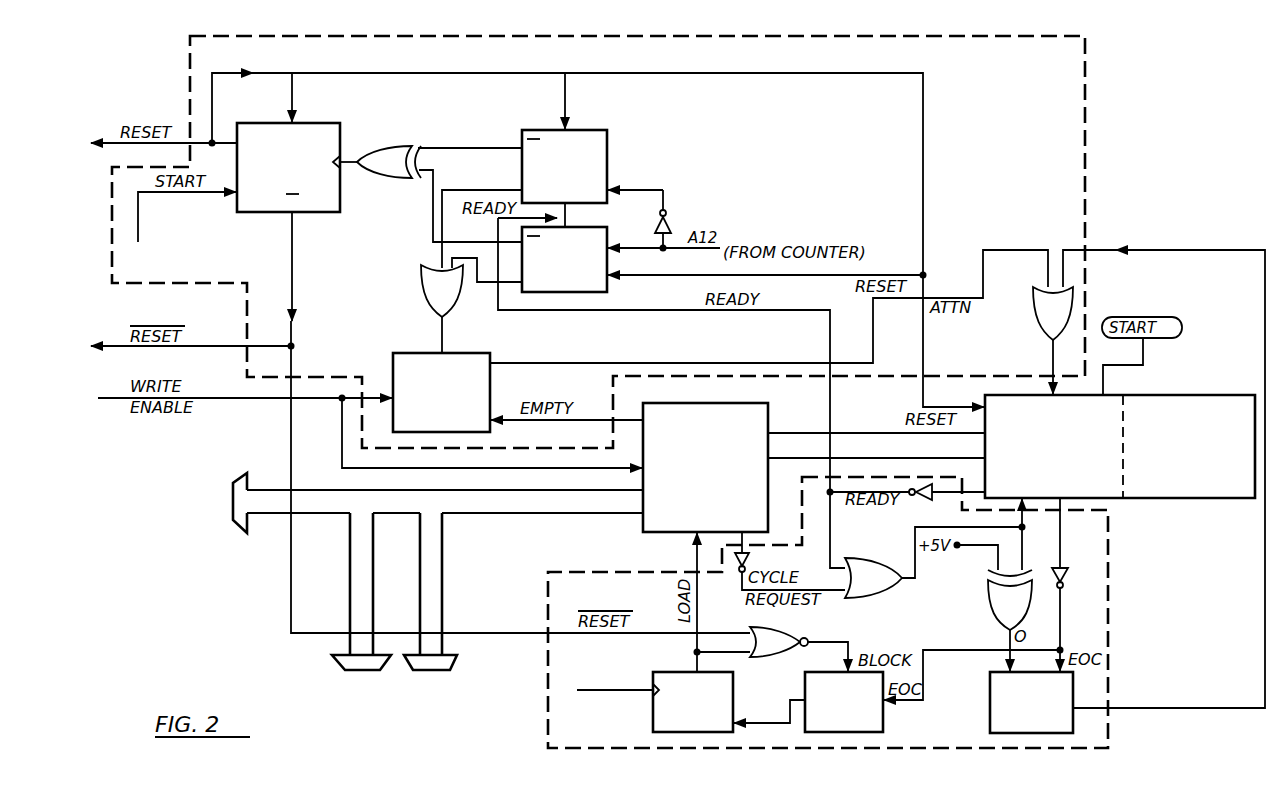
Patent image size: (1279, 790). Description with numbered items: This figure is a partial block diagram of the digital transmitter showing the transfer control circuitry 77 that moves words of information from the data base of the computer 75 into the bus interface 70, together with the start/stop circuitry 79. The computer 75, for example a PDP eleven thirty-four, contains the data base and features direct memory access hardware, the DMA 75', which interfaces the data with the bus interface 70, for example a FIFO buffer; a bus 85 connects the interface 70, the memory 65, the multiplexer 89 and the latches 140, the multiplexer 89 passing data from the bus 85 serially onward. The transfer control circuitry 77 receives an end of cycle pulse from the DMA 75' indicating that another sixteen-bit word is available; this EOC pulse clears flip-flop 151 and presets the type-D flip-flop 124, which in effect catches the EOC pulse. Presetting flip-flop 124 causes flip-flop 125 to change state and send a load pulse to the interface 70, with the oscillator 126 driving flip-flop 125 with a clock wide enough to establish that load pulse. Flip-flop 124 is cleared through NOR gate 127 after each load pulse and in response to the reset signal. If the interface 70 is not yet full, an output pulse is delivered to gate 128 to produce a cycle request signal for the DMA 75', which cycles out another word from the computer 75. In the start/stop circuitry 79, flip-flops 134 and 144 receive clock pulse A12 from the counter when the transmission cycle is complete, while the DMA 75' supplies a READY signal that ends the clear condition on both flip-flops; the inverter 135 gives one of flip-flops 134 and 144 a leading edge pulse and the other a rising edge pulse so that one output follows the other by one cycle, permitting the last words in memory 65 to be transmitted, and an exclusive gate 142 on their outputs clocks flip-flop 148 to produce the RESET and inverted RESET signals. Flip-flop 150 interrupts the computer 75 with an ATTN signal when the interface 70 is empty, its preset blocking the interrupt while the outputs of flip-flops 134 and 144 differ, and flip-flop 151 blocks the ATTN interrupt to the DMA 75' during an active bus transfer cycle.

The flip-flop 148 is at (298, 182).
The exclusive OR gate 142 is at (400, 140).
The flip-flop 134 is at (575, 182).
The inverter 135 is at (672, 215).
The flip-flop 144 is at (575, 274).
The flip-flop 150 is at (455, 404).
The bus interface 70 is at (717, 516).
The start/stop circuitry 79 is at (923, 115).
The DMA 75' is at (1054, 446).
The computer 75 is at (1189, 446).
The memory 65 is at (160, 541).
The bus 85 is at (402, 515).
The multiplexer 89 is at (367, 718).
The latches 140 is at (442, 736).
The transfer control circuitry 77 is at (940, 772).
The oscillator 126 is at (582, 680).
The flip-flop 125 is at (700, 717).
The NOR gate 127 is at (772, 660).
The type-D flip-flop 124 is at (856, 730).
The NOR gate 128 is at (888, 596).
The flip-flop 151 is at (1030, 724).